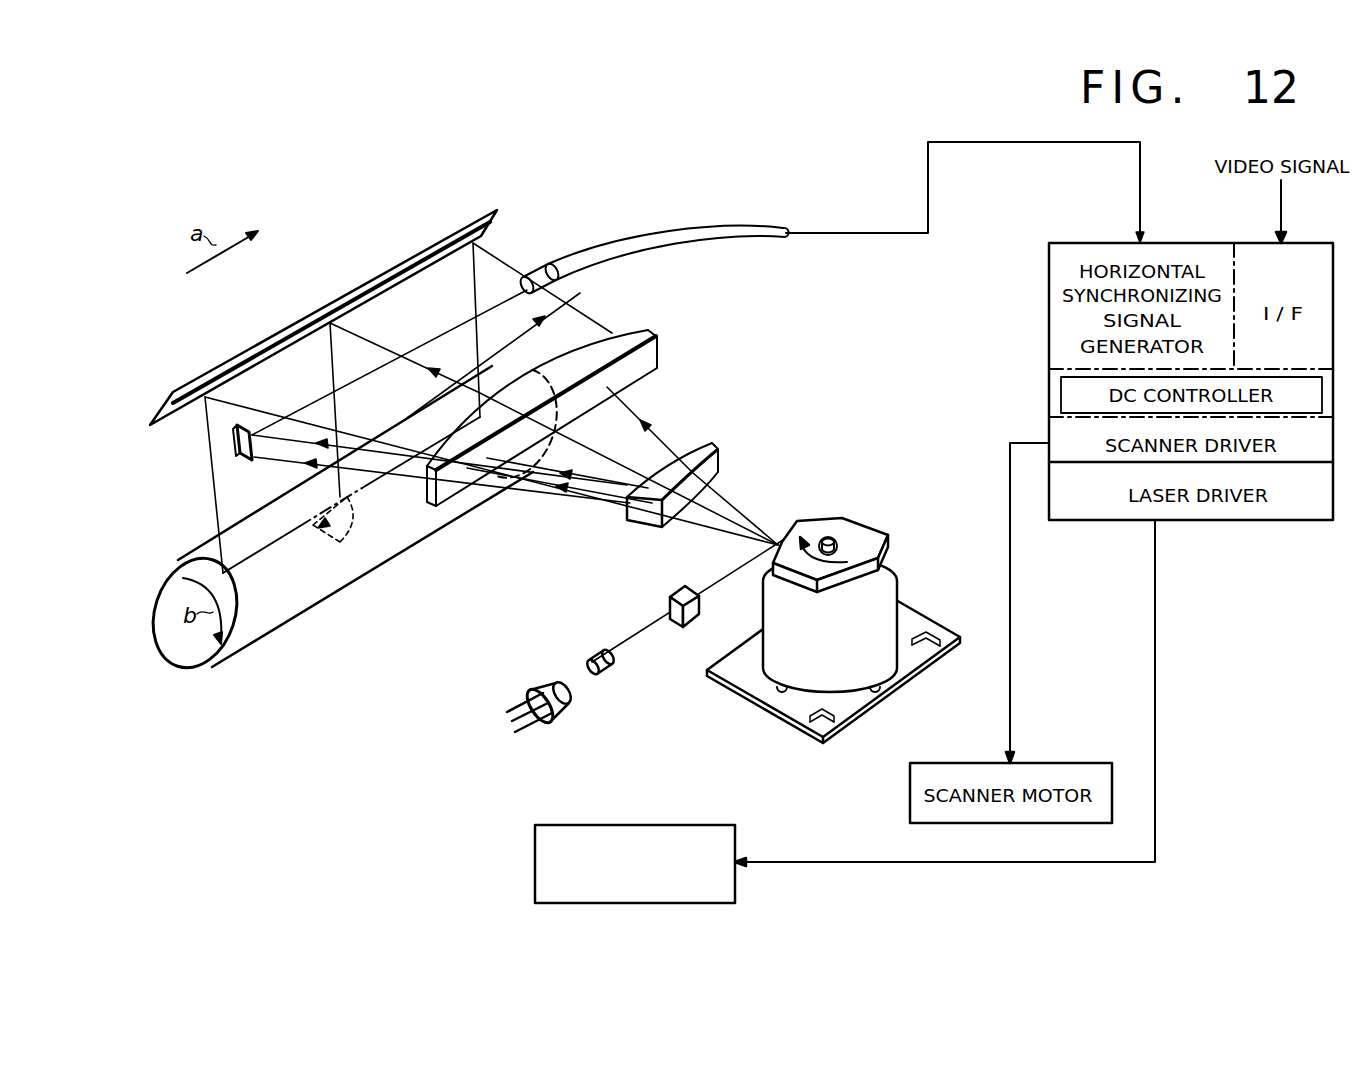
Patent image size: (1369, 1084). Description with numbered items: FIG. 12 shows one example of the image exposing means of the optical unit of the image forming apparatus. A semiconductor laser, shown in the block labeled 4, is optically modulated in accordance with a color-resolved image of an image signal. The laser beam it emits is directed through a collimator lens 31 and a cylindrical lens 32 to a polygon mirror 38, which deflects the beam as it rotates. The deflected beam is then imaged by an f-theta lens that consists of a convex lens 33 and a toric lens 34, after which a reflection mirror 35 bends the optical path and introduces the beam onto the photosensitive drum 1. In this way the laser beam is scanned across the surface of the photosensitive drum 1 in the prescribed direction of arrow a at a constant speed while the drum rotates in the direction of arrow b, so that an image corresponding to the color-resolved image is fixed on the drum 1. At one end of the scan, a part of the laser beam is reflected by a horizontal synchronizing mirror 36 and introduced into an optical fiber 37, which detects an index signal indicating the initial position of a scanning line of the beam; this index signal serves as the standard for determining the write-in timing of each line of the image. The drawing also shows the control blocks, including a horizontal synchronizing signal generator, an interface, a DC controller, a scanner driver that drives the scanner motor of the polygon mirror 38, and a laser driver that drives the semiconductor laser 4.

The photosensitive drum 1 is at (312, 587).
The semiconductor laser 4 is at (535, 845).
The collimator lens 31 is at (593, 660).
The cylindrical lens 32 is at (684, 590).
The convex lens 33 is at (712, 448).
The toric lens 34 is at (618, 333).
The reflection mirror 35 is at (410, 262).
The horizontal synchronizing mirror 36 is at (240, 458).
The optical fiber 37 is at (588, 254).
The polygon mirror 38 is at (848, 520).